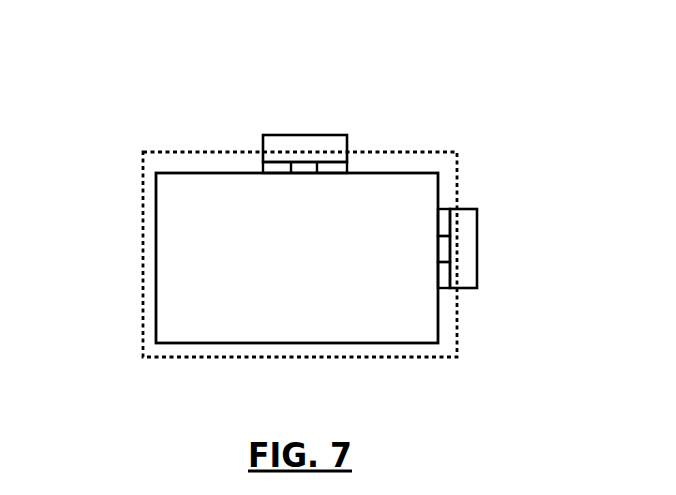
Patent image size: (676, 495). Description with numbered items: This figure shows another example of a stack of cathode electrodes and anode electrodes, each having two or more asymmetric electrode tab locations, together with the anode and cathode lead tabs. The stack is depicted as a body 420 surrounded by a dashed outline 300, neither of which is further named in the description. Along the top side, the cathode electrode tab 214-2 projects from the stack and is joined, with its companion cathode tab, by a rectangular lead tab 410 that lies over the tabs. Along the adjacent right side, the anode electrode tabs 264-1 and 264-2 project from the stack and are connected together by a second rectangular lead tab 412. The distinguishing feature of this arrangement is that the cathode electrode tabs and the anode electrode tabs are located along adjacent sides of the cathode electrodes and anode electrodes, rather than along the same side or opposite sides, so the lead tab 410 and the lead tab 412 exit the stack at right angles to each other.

The power tool / device assembly (dashed boundary) 300 is at (156, 239).
The housing body 420 is at (156, 288).
The lead tab 410 is at (312, 135).
The cathode electrode tab 214-2 is at (263, 170).
The anode electrode tab 264-1 is at (442, 207).
The anode electrode tab 264-2 is at (443, 290).
The lead tab 412 is at (477, 252).